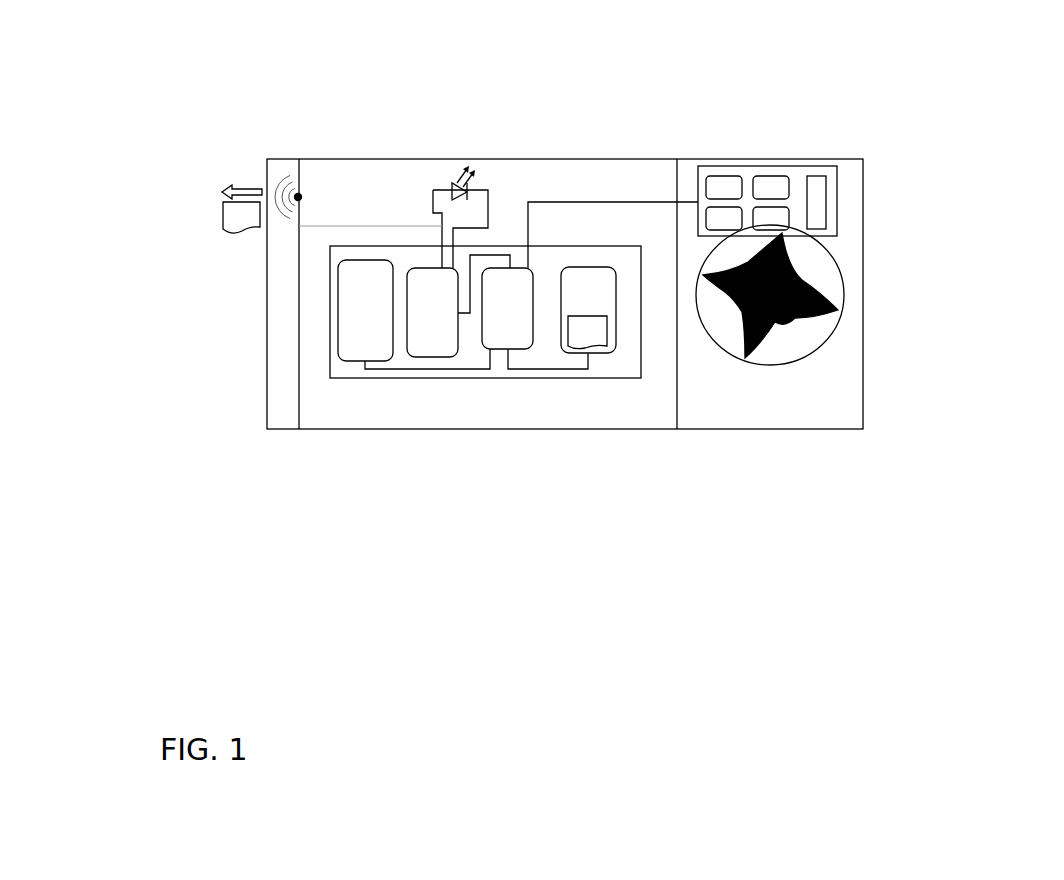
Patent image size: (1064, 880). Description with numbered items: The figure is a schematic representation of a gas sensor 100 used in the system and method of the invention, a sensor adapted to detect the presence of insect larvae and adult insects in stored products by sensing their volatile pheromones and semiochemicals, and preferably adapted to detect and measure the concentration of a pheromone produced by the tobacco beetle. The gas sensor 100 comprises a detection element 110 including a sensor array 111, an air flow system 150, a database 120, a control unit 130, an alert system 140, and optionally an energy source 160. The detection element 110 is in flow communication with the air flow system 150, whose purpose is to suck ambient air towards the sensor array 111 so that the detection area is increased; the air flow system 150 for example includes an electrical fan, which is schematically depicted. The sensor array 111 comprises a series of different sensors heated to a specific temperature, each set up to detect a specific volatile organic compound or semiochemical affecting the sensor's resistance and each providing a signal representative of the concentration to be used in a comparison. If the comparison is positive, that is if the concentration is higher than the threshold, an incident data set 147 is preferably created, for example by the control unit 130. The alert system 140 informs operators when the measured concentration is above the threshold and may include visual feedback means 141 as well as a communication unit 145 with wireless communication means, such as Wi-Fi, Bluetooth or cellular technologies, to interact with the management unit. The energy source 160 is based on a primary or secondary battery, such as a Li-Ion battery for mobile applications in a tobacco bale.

The gas sensor 100 is at (597, 452).
The detection element 110 is at (869, 145).
The sensor array 111 is at (807, 172).
The database 120 is at (575, 292).
The control unit 130 is at (495, 316).
The alert system 140 is at (419, 322).
The visual feedback means 141 is at (456, 180).
The communication unit 145 is at (298, 196).
The incident data set 147 is at (576, 338).
The air flow system 150 is at (813, 293).
The energy source 160 is at (351, 319).